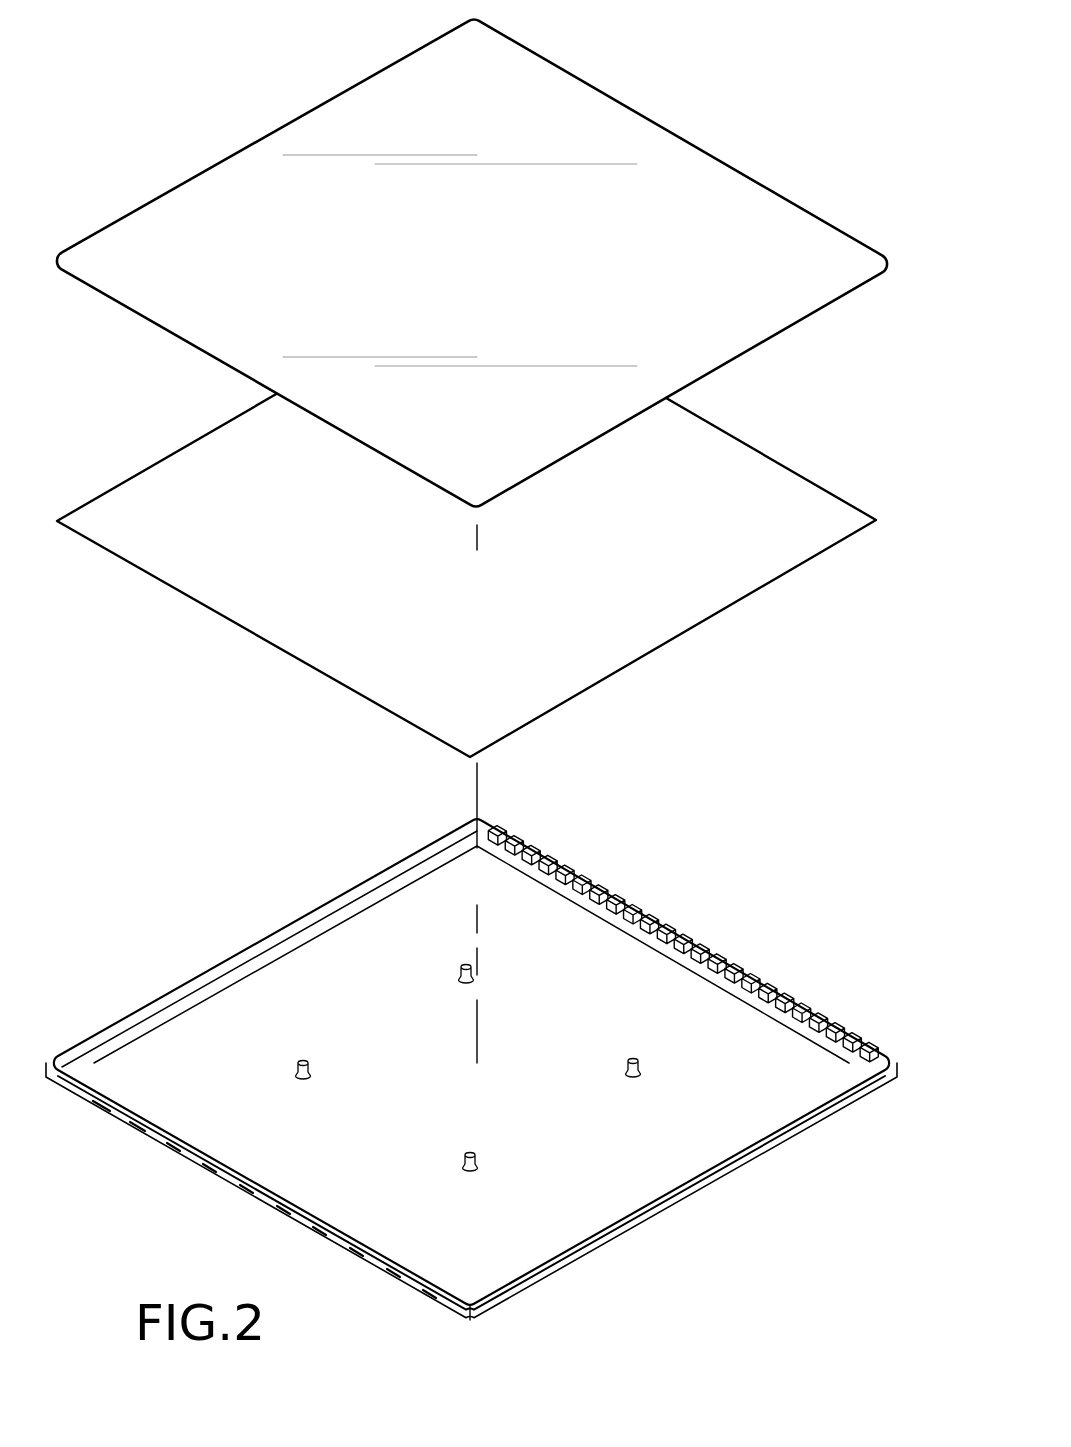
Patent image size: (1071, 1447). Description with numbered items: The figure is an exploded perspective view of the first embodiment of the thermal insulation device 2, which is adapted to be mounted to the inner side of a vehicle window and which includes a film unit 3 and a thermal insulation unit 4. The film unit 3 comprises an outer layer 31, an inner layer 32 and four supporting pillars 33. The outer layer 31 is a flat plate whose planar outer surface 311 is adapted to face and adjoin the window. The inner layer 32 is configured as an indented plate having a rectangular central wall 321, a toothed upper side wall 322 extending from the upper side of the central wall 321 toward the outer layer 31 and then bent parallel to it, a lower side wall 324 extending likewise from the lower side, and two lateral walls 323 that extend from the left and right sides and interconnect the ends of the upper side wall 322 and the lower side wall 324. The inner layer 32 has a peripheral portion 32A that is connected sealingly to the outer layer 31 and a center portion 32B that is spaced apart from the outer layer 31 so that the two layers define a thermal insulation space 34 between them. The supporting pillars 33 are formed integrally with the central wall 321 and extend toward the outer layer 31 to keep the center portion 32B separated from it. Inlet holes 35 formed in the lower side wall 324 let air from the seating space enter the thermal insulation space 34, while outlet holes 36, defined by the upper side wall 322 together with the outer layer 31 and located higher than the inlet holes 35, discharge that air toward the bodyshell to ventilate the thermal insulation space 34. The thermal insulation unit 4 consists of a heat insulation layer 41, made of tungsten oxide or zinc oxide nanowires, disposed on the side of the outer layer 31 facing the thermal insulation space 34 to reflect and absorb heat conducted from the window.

The thermal insulation device 2 is at (203, 128).
The film unit 3 is at (471, 1066).
The outer layer 31 is at (472, 263).
The outer surface 311 is at (362, 118).
The inner layer 32 is at (471, 1068).
The peripheral portion 32A is at (162, 1001).
The center portion 32B is at (413, 1063).
The central wall 321 is at (725, 1130).
The upper side wall 322 is at (670, 928).
The lateral walls 323 is at (338, 906).
The lower side wall 324 is at (305, 1229).
The supporting pillars 33 is at (475, 1172).
The thermal insulation space 34 is at (695, 1003).
The inlet holes 35 is at (205, 1168).
The outlet holes 36 is at (607, 895).
The thermal insulation unit 4 is at (466, 520).
The heat insulation layer 41 is at (180, 572).